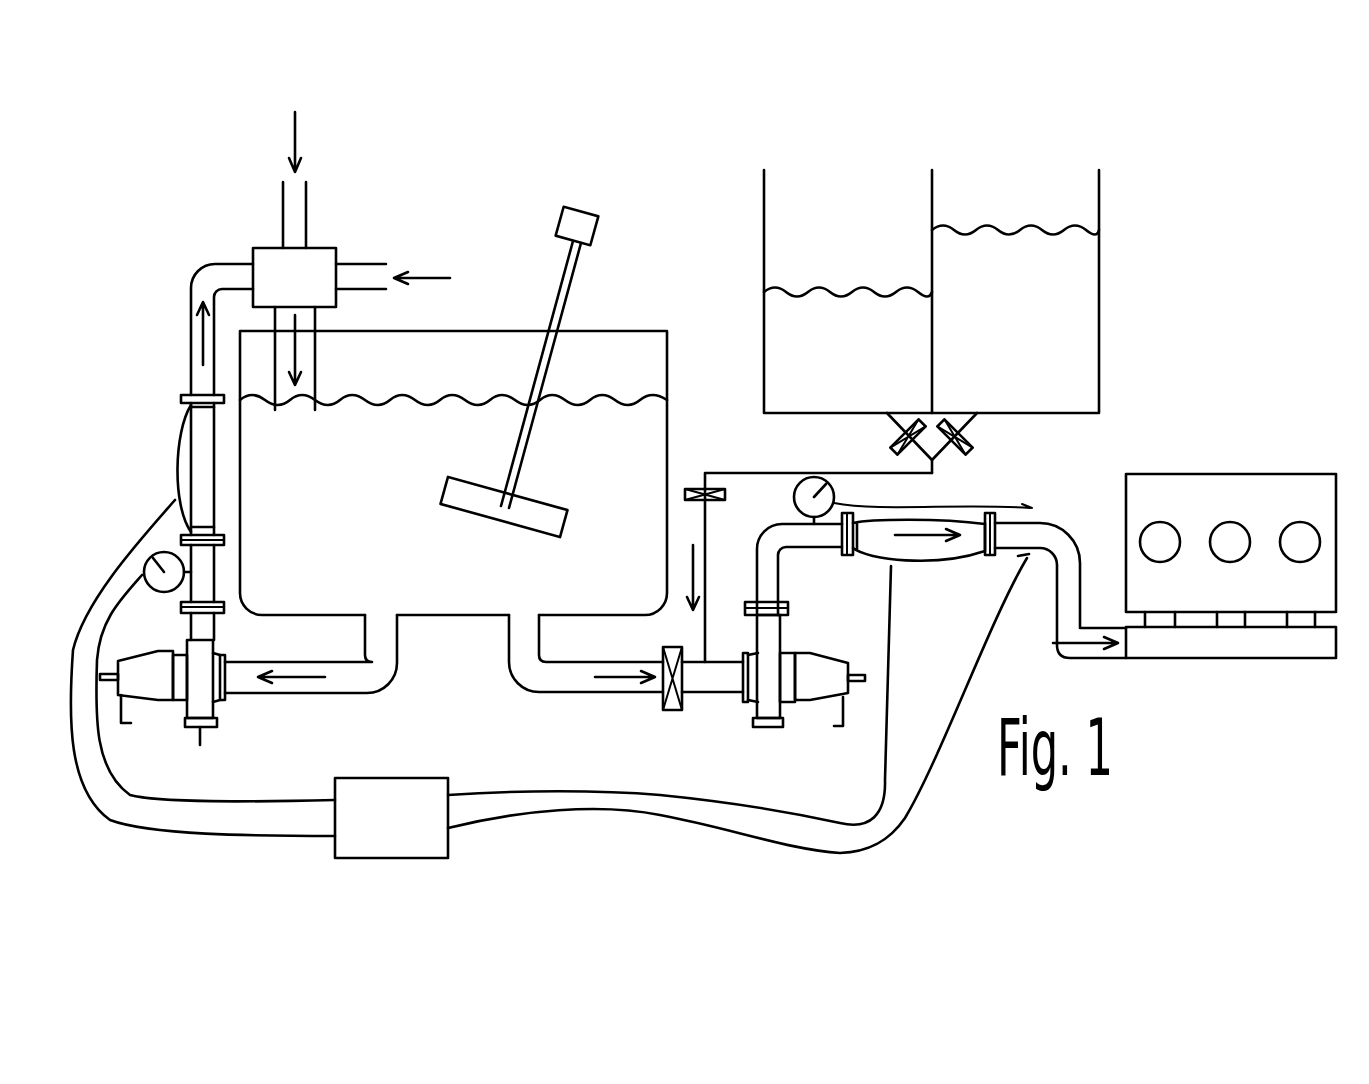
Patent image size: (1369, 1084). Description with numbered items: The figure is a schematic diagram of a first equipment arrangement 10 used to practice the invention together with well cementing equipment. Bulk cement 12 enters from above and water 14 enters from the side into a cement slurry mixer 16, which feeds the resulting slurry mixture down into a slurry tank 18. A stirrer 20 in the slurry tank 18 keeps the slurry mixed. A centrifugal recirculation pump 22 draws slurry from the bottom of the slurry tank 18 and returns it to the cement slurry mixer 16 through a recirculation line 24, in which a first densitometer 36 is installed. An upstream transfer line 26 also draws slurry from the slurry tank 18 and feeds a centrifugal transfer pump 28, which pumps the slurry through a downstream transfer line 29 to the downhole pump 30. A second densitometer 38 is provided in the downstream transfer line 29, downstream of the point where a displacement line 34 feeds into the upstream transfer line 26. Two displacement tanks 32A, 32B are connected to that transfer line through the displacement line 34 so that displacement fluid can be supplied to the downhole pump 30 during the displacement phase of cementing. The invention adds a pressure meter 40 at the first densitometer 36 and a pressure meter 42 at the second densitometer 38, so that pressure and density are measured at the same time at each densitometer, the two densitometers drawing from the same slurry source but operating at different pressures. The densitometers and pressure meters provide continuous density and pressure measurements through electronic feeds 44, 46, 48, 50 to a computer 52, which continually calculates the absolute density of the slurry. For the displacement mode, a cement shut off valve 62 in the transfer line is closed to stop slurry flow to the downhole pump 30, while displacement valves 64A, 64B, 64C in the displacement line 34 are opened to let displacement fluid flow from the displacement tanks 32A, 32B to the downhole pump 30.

The first equipment arrangement 10 is at (1132, 196).
The bulk cement 12 is at (297, 134).
The water 14 is at (420, 274).
The cement slurry mixer 16 is at (319, 247).
The slurry tank 18 is at (444, 331).
The stirrer 20 is at (566, 300).
The centrifugal recirculation pump 22 is at (158, 699).
The recirculation line 24 is at (194, 350).
The upstream transfer line 26 is at (622, 694).
The centrifugal transfer pump 28 is at (812, 702).
The downstream transfer line 29 is at (780, 572).
The downhole pump 30 is at (1198, 474).
The displacement tank 32A is at (764, 207).
The displacement tank 32B is at (1099, 210).
The displacement line 34 is at (783, 471).
The first densitometer 36 is at (173, 478).
The second densitometer 38 is at (912, 566).
The pressure meter 40 is at (171, 594).
The pressure meter 42 is at (795, 500).
The electronic feed 44 is at (268, 836).
The electronic feed 46 is at (526, 790).
The electronic feed 48 is at (250, 801).
The electronic feed 50 is at (608, 813).
The computer 52 is at (380, 858).
The cement shut off valve 62 is at (670, 712).
The displacement valve 64A is at (891, 455).
The displacement valve 64B is at (966, 452).
The displacement valve 64C is at (691, 487).